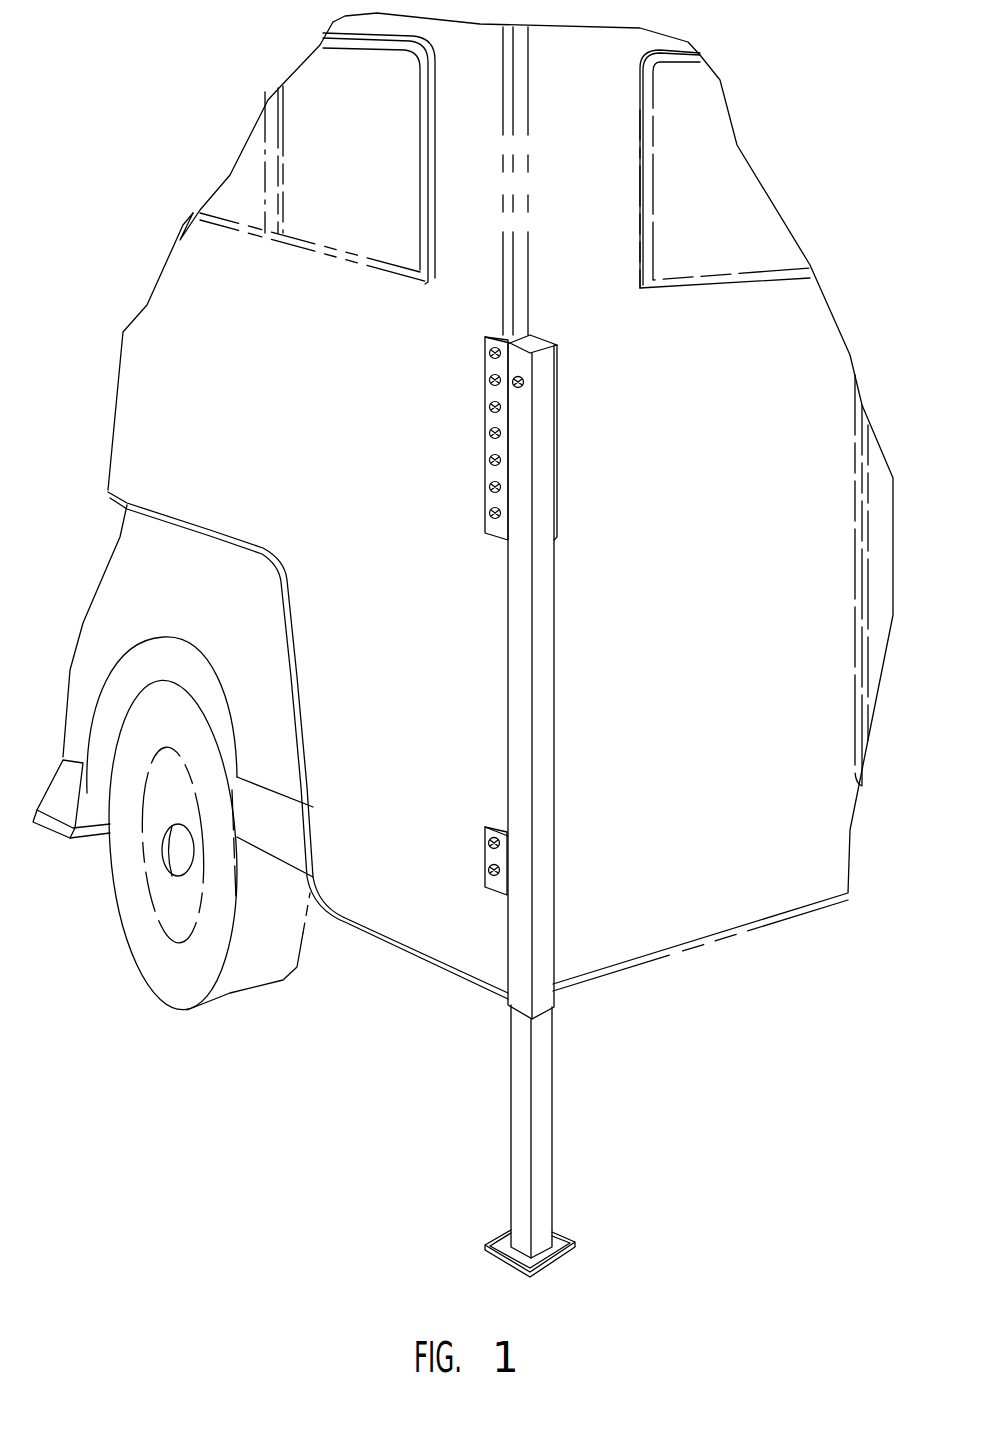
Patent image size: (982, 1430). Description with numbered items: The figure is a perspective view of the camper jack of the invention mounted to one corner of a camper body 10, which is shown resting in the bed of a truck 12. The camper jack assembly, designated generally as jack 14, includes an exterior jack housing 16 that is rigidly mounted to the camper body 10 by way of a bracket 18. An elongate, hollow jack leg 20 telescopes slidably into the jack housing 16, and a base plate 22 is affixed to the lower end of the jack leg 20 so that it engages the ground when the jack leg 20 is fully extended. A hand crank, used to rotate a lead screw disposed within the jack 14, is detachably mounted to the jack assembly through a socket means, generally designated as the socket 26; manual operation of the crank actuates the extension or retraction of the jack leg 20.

The camper body 10 is at (783, 333).
The truck 12 is at (145, 573).
The camper jack assembly 14 is at (568, 647).
The exterior jack housing 16 is at (556, 575).
The bracket 18 is at (492, 370).
The jack leg 20 is at (549, 1097).
The base plate 22 is at (562, 1234).
The socket 26 is at (520, 396).